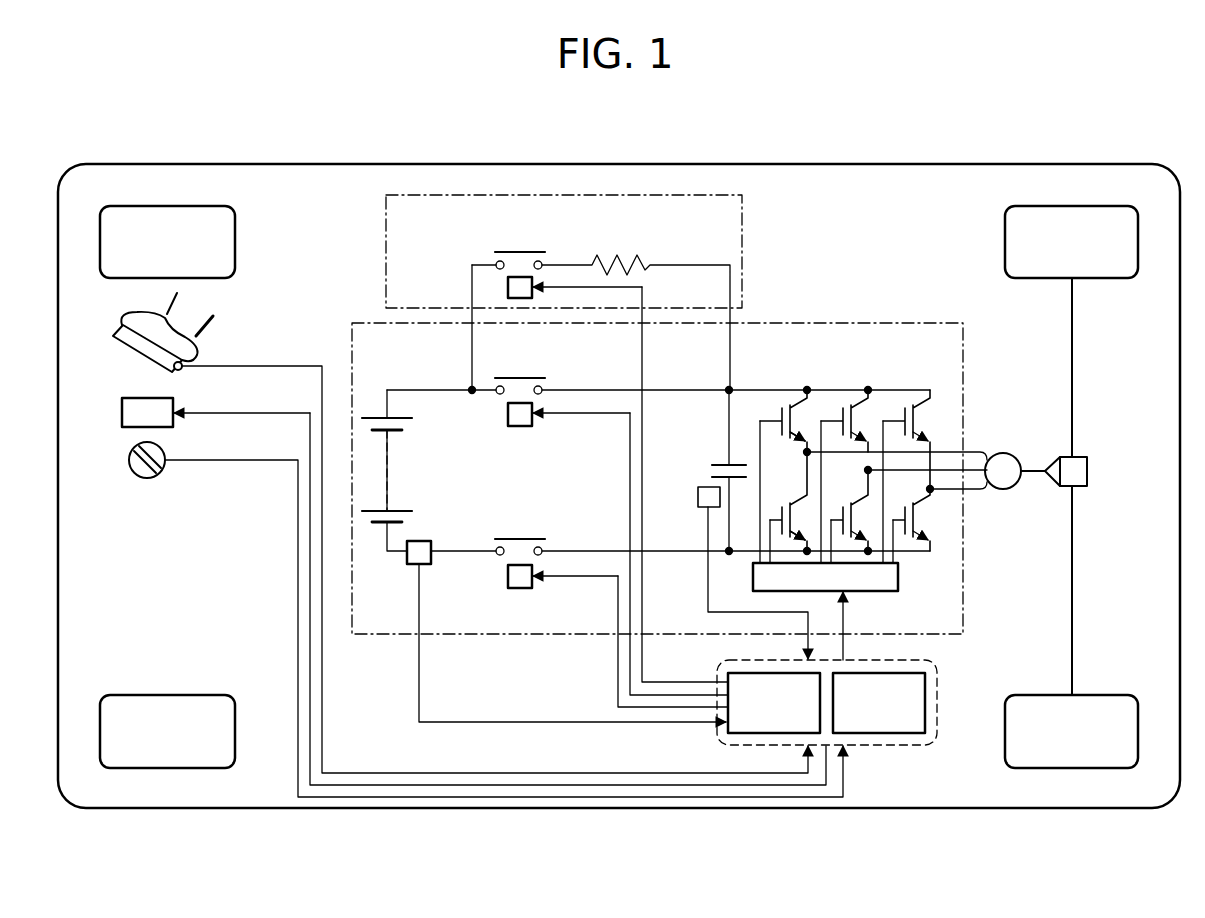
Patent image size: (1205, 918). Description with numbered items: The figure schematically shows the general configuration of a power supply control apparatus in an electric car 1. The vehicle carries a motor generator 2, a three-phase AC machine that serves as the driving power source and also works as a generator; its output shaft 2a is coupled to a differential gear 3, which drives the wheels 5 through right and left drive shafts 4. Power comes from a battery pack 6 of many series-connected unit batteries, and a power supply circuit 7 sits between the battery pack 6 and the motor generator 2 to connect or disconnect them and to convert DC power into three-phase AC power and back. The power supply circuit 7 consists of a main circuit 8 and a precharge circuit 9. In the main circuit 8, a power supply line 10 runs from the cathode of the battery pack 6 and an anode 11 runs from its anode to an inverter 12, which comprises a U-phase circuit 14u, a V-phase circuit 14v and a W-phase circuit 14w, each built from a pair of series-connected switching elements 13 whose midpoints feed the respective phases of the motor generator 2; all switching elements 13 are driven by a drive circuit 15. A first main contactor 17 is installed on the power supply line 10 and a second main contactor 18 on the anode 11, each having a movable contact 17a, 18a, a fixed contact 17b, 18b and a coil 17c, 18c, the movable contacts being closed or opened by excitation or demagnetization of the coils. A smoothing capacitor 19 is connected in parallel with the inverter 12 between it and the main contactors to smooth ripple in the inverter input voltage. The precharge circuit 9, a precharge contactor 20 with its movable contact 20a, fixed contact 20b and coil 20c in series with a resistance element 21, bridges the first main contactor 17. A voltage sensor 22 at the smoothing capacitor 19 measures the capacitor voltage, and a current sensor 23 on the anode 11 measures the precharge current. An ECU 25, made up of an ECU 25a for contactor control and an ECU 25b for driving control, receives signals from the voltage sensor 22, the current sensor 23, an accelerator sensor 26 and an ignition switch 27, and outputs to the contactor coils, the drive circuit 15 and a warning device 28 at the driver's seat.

The electric car 1 is at (866, 142).
The motor generator 2 is at (1015, 471).
The output shaft 2a is at (1028, 482).
The differential gear 3 is at (1088, 471).
The drive shaft 4 is at (1073, 352).
The wheel 5 is at (1005, 246).
The battery pack 6 is at (378, 417).
The power supply circuit 7 is at (619, 438).
The main circuit 8 is at (800, 291).
The precharge circuit 9 is at (742, 225).
The power supply line 10 is at (664, 389).
The anode 11 is at (668, 554).
The inverter 12 is at (685, 491).
The switching element 13 is at (780, 415).
The U-phase circuit 14u is at (786, 400).
The V-phase circuit 14v is at (847, 400).
The W-phase circuit 14w is at (909, 400).
The drive circuit 15 is at (898, 577).
The first main contactor 17 is at (569, 516).
The movable contact 17a is at (522, 376).
The fixed contact 17b is at (541, 386).
The coil 17c is at (521, 427).
The second main contactor 18 is at (588, 593).
The movable contact 18a is at (522, 538).
The fixed contact 18b is at (541, 547).
The coil 18c is at (521, 588).
The smoothing capacitor 19 is at (712, 467).
The precharge contactor 20 is at (491, 255).
The movable contact 20a is at (522, 250).
The fixed contact 20b is at (498, 261).
The coil 20c is at (508, 288).
The resistance element 21 is at (620, 262).
The voltage sensor 22 is at (698, 496).
The current sensor 23 is at (418, 540).
The ECU 25 is at (828, 729).
The ECU for contactor control 25a is at (728, 682).
The ECU for driving control 25b is at (925, 682).
The accelerator sensor 26 is at (167, 380).
The ignition switch 27 is at (129, 460).
The warning device 28 is at (122, 413).